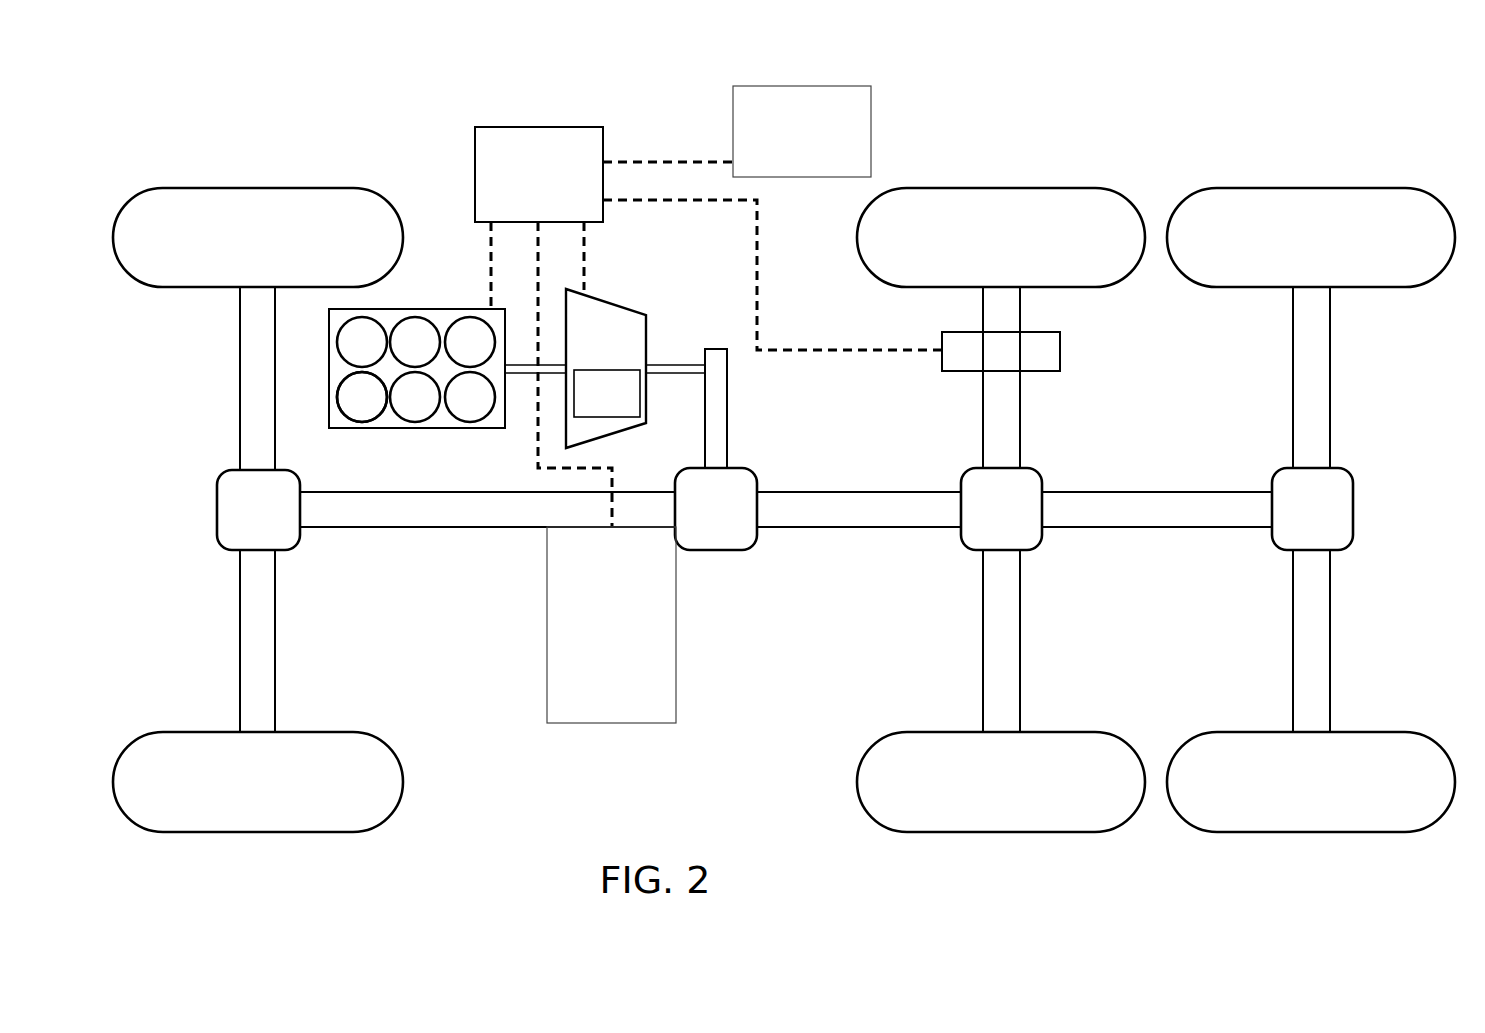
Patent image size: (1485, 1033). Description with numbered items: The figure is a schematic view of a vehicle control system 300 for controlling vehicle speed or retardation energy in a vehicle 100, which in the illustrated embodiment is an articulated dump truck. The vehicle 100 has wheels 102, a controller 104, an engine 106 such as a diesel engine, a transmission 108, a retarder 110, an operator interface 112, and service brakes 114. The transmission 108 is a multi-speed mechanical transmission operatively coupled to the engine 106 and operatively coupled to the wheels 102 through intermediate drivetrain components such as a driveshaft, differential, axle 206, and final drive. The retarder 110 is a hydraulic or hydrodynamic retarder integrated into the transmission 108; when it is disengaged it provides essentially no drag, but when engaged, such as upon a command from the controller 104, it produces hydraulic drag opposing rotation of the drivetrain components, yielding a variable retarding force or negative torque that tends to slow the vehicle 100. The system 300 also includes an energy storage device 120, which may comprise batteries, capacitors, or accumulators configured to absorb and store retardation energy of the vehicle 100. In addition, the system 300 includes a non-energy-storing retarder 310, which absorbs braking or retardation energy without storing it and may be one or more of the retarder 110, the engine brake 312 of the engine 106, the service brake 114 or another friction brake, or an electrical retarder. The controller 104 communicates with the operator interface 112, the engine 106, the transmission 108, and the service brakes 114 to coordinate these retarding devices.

The vehicle 100 is at (470, 60).
The control system 300 is at (648, 60).
The wheels 102 is at (340, 220).
The controller 104 is at (516, 190).
The engine 106 is at (388, 420).
The transmission 108 is at (620, 302).
The retarder 110 is at (585, 406).
The operator interface 112 is at (785, 178).
The service brakes 114 is at (1062, 359).
The energy storage device 120 is at (547, 672).
The axle 206 is at (267, 609).
The non-energy-storing retarder 310 is at (447, 436).
The engine brake 312 is at (333, 382).